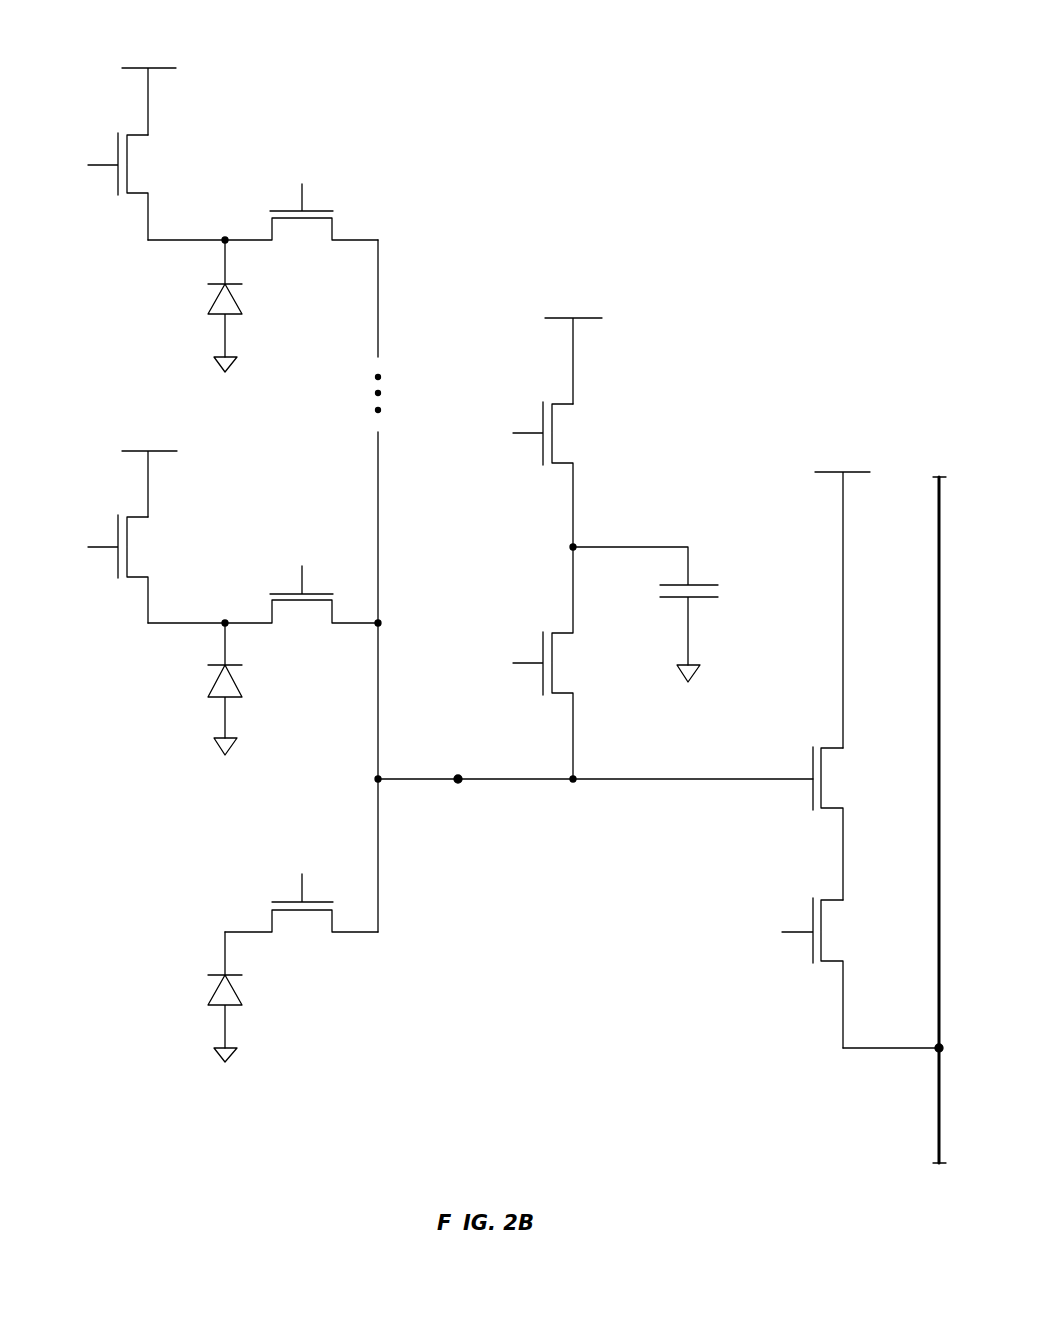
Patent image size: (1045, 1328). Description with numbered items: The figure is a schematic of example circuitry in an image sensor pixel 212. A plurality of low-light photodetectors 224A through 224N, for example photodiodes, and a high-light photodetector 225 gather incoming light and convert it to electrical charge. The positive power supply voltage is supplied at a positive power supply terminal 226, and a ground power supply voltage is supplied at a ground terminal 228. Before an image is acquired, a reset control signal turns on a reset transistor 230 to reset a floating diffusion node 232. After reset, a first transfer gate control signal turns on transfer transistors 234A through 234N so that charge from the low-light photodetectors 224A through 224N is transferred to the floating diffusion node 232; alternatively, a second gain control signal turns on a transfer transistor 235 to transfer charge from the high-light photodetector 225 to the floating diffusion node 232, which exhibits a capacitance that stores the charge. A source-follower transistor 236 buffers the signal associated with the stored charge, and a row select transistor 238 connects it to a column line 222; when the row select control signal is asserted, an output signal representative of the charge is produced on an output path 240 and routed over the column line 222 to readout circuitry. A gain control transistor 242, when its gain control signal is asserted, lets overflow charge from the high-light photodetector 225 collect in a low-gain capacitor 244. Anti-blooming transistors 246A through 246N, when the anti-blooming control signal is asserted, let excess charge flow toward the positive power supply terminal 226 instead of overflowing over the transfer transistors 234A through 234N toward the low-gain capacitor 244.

The image sensor pixel 212 is at (758, 131).
The column line 222 is at (939, 613).
The low-light photodetector 224A is at (232, 297).
The low-light photodetector 224N is at (232, 680).
The high-light photodetector 225 is at (232, 990).
The positive power supply terminal 226 is at (176, 68).
The ground terminal 228 is at (236, 366).
The reset transistor 230 is at (556, 402).
The floating diffusion node 232 is at (459, 776).
The transfer transistor 234A is at (337, 226).
The transfer transistor 234N is at (270, 607).
The transfer transistor 235 is at (270, 917).
The source-follower transistor 236 is at (826, 746).
The row select transistor 238 is at (825, 898).
The output path 240 is at (930, 1052).
The gain control transistor 242 is at (557, 632).
The low-gain capacitor 244 is at (706, 585).
The anti-blooming transistor 246A is at (133, 197).
The anti-blooming transistor 246N is at (133, 580).